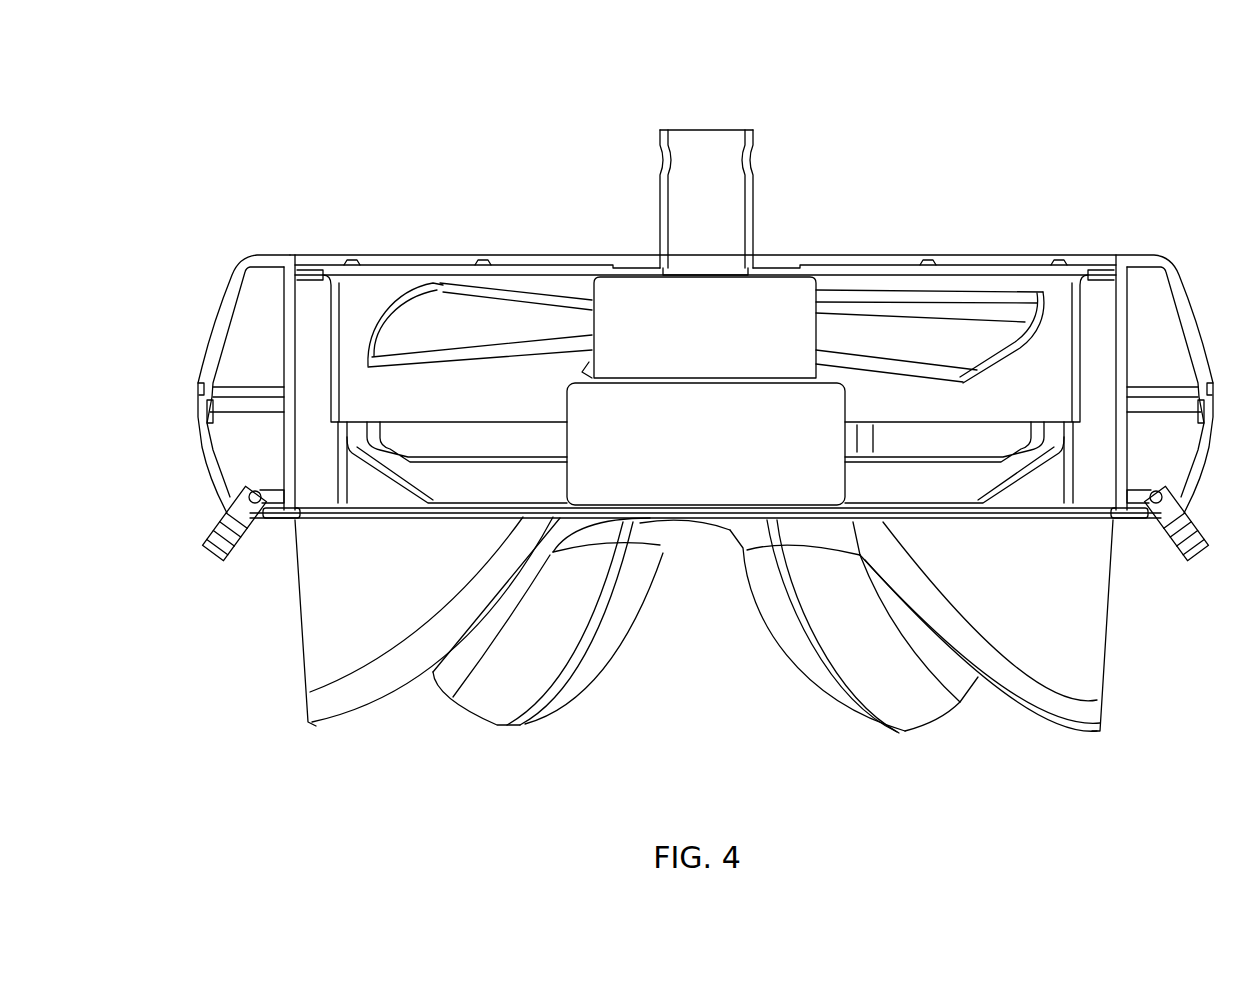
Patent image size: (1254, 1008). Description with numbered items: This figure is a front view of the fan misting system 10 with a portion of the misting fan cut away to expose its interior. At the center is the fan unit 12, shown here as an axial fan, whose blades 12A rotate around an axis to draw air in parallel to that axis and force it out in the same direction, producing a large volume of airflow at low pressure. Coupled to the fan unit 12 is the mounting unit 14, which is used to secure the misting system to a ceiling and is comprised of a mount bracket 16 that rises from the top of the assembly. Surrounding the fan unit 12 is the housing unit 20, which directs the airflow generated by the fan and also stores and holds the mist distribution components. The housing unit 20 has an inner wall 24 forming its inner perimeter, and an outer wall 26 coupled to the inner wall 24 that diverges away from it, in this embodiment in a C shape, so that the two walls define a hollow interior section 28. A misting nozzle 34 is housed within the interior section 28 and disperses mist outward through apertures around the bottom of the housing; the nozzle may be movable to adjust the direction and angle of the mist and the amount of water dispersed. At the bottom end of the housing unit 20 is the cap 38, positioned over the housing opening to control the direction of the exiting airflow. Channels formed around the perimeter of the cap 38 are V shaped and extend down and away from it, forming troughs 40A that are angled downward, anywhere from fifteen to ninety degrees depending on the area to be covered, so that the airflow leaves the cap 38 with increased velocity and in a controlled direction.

The fan misting system 10 is at (356, 134).
The fan unit 12 is at (955, 208).
The blades 12A is at (442, 308).
The mounting unit 14 is at (810, 162).
The mount bracket 16 is at (661, 140).
The housing unit 20 is at (191, 266).
The inner wall 24 is at (1126, 298).
The outer wall 26 is at (230, 270).
The interior section 28 is at (250, 438).
The misting nozzle 34 is at (213, 562).
The cap 38 is at (661, 547).
The trough 40A is at (1030, 672).